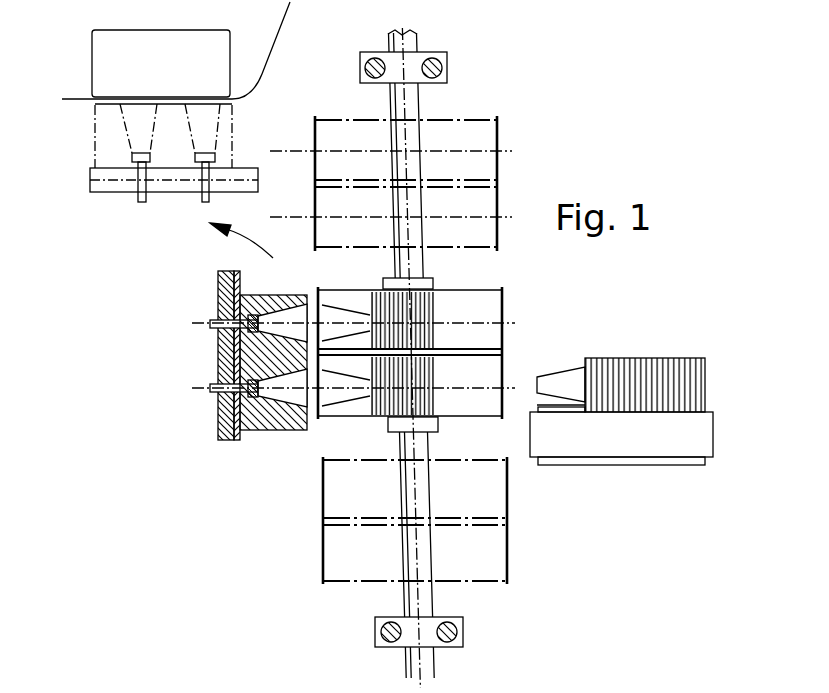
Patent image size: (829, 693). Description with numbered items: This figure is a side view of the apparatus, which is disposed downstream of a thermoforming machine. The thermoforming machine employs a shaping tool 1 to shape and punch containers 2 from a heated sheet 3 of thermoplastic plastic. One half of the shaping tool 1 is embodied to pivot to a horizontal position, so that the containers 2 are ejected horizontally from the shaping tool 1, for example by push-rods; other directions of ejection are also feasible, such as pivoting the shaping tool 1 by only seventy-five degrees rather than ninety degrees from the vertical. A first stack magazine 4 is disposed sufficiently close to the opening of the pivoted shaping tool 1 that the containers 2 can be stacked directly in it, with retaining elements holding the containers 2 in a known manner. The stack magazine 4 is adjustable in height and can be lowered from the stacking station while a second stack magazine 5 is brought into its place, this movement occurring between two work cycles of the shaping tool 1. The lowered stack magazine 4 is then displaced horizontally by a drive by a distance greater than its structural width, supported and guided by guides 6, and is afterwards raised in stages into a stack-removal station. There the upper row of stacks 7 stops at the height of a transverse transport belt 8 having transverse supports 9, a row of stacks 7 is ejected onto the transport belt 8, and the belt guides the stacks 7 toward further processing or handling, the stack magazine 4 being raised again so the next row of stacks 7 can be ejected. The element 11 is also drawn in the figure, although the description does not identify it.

The die plate 1 is at (260, 432).
The die block with conical bores 2 is at (288, 430).
The feeding device 3 is at (73, 103).
The grooved roller 4 is at (478, 289).
The upper roller 5 is at (497, 132).
The lower bearing block 6 is at (463, 633).
The ribbed tool block 7 is at (660, 357).
The housing 8 is at (702, 437).
The base plate 9 is at (660, 465).
The upper bearing block 11 is at (443, 65).